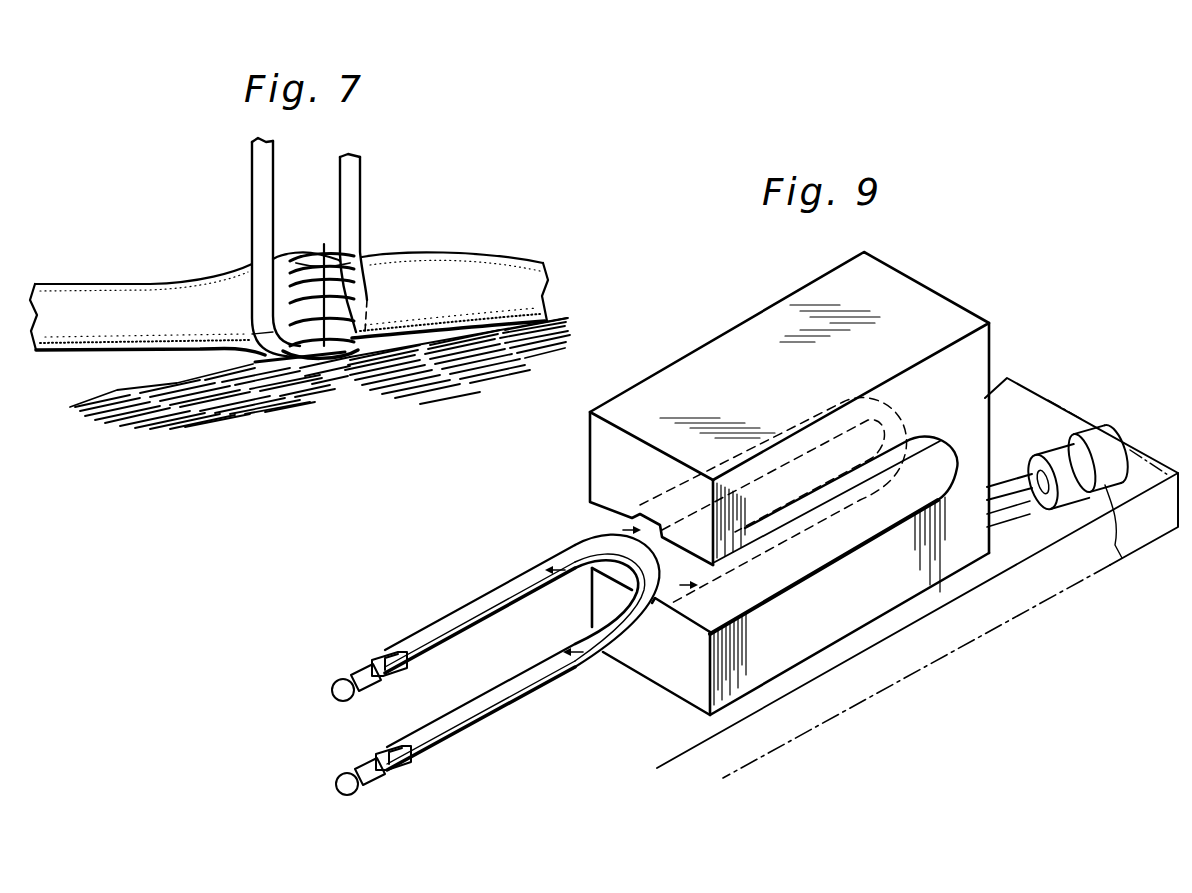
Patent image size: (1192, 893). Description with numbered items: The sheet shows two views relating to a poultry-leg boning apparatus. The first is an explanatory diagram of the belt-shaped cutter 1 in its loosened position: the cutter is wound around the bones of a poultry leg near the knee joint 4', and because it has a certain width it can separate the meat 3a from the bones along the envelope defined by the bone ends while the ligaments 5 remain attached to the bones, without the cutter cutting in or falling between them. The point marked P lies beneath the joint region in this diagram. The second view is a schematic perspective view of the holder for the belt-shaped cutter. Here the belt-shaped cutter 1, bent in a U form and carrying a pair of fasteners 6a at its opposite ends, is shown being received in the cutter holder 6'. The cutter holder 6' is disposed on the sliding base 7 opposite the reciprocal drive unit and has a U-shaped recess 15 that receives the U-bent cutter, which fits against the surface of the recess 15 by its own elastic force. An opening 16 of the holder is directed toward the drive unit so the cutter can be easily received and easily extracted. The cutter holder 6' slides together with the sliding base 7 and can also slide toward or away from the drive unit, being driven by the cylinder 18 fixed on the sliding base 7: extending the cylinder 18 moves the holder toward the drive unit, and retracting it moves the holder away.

In FIG. 7, the belt-shaped cutter 1 is at (359, 212).
In FIG. 9, the belt-shaped cutter 1 is at (548, 682).
In FIG. 7, the meat 3a is at (177, 383).
In FIG. 7, the knee joint 4' is at (306, 245).
In FIG. 7, the ligaments 5 is at (343, 283).
In FIG. 7, the pressure point P is at (308, 388).
In FIG. 9, the fasteners 6a is at (360, 667).
In FIG. 9, the cutter holder 6' is at (790, 636).
In FIG. 9, the sliding base 7 is at (690, 722).
In FIG. 9, the U-shaped recess 15 is at (750, 552).
In FIG. 9, the opening 16 is at (647, 520).
In FIG. 9, the cylinder 18 is at (1076, 484).